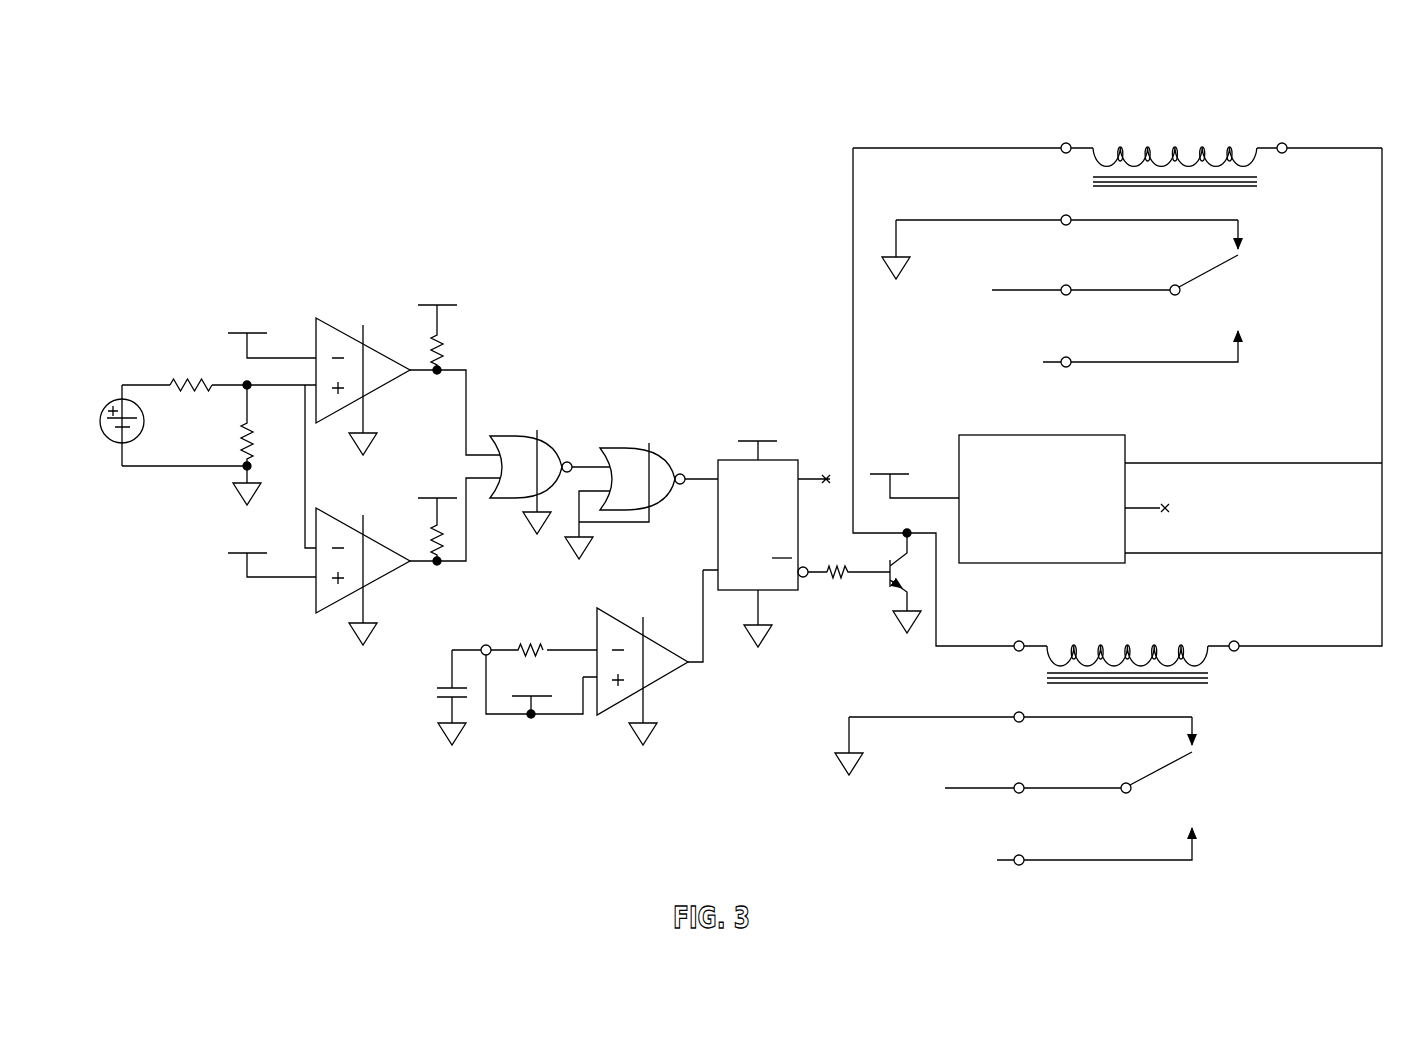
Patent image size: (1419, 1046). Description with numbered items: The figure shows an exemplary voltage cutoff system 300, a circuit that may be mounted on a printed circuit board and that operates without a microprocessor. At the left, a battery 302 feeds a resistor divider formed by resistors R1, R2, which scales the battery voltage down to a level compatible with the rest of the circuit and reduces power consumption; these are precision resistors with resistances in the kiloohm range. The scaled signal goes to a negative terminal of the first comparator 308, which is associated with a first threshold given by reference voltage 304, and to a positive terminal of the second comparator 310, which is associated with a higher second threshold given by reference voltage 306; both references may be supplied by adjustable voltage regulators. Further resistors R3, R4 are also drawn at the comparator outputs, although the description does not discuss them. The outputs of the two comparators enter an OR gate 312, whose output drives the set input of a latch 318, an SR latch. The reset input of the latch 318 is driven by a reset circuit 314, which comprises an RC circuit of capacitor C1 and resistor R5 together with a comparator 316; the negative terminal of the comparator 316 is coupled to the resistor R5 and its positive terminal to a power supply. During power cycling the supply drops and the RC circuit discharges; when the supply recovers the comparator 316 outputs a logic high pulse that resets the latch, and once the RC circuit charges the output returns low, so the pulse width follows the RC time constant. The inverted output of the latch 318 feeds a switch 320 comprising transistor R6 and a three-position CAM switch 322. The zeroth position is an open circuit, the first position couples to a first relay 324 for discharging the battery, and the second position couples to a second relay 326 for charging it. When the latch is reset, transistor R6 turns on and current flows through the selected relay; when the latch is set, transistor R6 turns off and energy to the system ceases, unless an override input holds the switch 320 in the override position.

The voltage cutoff system 300 is at (111, 124).
The battery 302 is at (102, 409).
The reference voltage 304 is at (215, 556).
The reference voltage 306 is at (215, 330).
The first comparator 308 is at (316, 600).
The second comparator 310 is at (316, 328).
The OR gate 312 is at (573, 414).
The reset circuit 314 is at (534, 738).
The comparator 316 is at (667, 676).
The latch 318 is at (782, 538).
The switch 320 is at (829, 428).
The CAM switch 322 is at (1065, 512).
The first relay 324 is at (1331, 100).
The second relay 326 is at (1266, 813).
The resistor R1 is at (179, 398).
The resistor R2 is at (237, 443).
The resistor R3 is at (430, 531).
The resistor R4 is at (430, 339).
The resistor R5 is at (513, 629).
The transistor R6 is at (858, 556).
The capacitor C1 is at (449, 697).